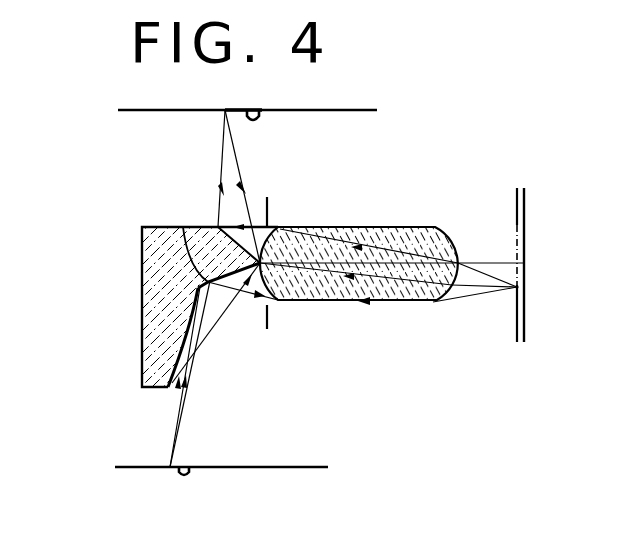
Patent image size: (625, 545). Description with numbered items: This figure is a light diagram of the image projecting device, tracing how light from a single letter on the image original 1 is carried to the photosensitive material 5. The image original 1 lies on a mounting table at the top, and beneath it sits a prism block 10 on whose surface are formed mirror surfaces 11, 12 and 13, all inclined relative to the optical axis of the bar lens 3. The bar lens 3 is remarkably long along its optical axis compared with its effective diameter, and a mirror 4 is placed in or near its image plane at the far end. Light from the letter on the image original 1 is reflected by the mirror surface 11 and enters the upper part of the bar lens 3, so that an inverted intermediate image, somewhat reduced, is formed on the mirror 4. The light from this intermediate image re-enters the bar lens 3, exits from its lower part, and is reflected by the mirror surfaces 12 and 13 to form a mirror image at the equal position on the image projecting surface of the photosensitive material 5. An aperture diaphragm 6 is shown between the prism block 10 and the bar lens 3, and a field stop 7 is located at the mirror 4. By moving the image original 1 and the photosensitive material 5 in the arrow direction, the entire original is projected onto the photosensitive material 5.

The image original 1 is at (352, 109).
The bar lens 3 is at (380, 236).
The mirror 4 is at (537, 205).
The photosensitive material 5 is at (307, 467).
The aperture diaphragm 6 is at (267, 204).
The field stop 7 is at (517, 300).
The prism block 10 is at (152, 243).
The mirror surface 11 is at (236, 243).
The mirror surface 12 is at (190, 237).
The mirror surface 13 is at (176, 365).